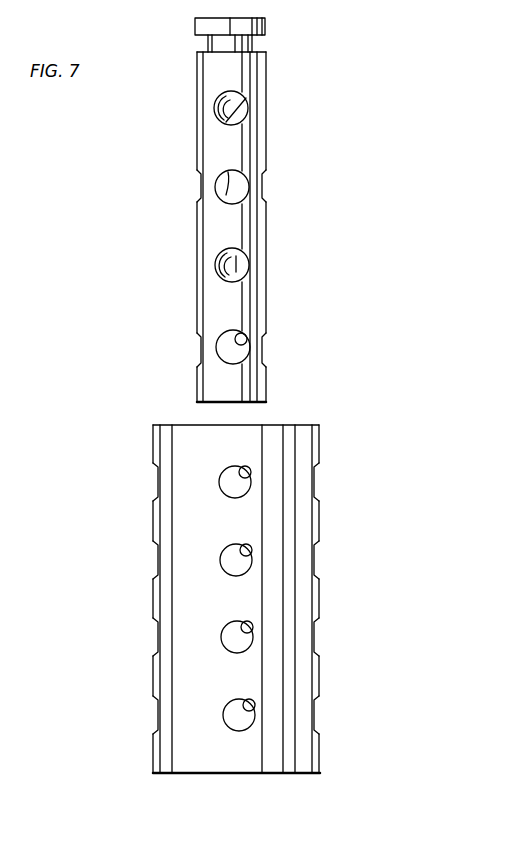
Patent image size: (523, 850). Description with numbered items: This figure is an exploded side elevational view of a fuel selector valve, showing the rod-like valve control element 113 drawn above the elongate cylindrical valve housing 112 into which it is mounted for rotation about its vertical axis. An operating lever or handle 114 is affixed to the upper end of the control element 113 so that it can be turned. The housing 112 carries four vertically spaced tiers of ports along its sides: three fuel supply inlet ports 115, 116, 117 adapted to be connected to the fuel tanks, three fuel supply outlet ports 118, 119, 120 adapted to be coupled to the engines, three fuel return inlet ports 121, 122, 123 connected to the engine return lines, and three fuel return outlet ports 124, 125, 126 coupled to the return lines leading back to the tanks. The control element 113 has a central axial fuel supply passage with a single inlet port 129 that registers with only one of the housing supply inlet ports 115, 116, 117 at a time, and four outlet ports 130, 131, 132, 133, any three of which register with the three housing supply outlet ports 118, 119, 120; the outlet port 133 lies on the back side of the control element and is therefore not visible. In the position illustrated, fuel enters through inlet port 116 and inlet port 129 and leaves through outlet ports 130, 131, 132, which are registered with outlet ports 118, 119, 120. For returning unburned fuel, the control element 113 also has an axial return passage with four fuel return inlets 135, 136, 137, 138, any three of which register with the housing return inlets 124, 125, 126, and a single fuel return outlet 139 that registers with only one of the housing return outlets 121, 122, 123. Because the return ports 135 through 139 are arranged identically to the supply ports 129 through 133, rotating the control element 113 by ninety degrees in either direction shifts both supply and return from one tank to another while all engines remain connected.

The valve housing 112 is at (300, 425).
The valve control element 113 is at (245, 137).
The operating lever or handle 114 is at (263, 32).
The fuel supply inlet port 115 is at (158, 476).
The fuel supply inlet port 116 is at (245, 466).
The fuel supply inlet port 117 is at (314, 478).
The fuel supply outlet port 118 is at (158, 556).
The fuel supply outlet port 119 is at (246, 544).
The fuel supply outlet port 120 is at (314, 556).
The fuel return inlet port 121 is at (158, 634).
The fuel return inlet port 122 is at (247, 621).
The fuel return inlet port 123 is at (314, 633).
The fuel return outlet port 124 is at (158, 719).
The fuel return outlet port 125 is at (249, 699).
The fuel return outlet port 126 is at (314, 714).
The inlet port 129 is at (219, 120).
The outlet port 130 is at (198, 174).
The outlet port 131 is at (226, 195).
The outlet port 132 is at (266, 188).
The outlet port 133 is at (175, 210).
The fuel return inlet 135 is at (198, 338).
The fuel return inlet 136 is at (247, 336).
The fuel return inlet 137 is at (267, 351).
The fuel return inlet 138 is at (311, 318).
The fuel return outlet 139 is at (227, 282).